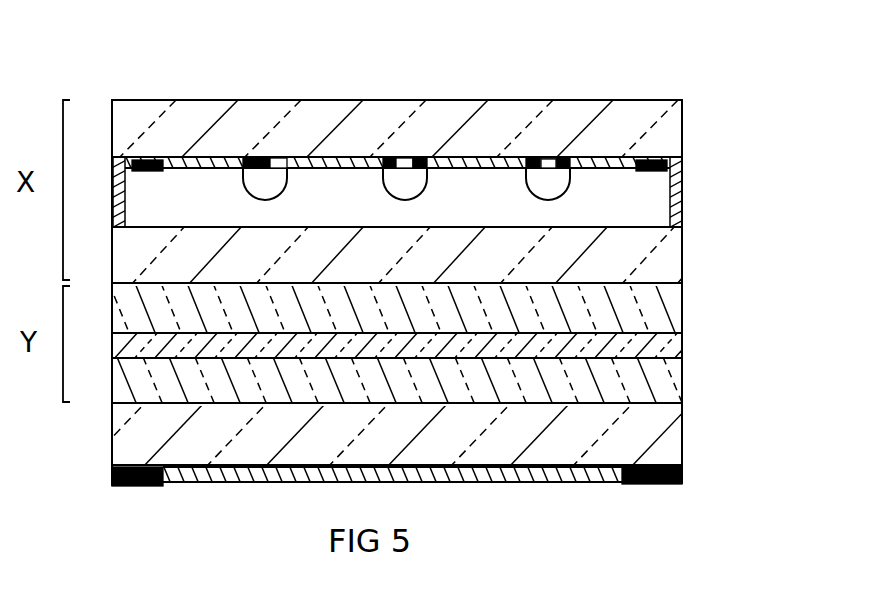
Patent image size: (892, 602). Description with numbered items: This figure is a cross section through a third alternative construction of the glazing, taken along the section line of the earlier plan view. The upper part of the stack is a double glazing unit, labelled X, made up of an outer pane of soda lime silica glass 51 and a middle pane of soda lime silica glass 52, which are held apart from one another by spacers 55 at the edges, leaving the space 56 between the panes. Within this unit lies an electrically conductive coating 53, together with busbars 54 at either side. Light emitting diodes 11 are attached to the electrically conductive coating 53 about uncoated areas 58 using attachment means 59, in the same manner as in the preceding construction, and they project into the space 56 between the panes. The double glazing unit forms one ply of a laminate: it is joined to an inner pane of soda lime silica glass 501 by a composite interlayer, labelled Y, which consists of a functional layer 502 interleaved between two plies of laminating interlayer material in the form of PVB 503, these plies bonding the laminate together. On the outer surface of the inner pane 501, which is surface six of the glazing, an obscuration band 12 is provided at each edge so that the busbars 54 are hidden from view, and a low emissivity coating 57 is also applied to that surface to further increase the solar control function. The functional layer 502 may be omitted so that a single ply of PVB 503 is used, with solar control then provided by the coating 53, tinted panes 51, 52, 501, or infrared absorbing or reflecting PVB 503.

The light emitting diodes 11 is at (546, 170).
The obscuration band 12 is at (132, 488).
The outer pane of glazing material 51 is at (641, 112).
The middle pane of glazing material 52 is at (672, 262).
The electrically conductive coating 53 is at (447, 157).
The busbars 54 is at (143, 158).
The spacers 55 is at (118, 152).
The cavity 56 is at (223, 193).
The low emissivity coating 57 is at (222, 474).
The uncoated areas 58 is at (268, 157).
The attachment means 59 is at (308, 157).
The inner pane of glazing material 501 is at (668, 434).
The functional layer 502 is at (675, 348).
The laminating interlayer material (PVB) 503 is at (672, 300).